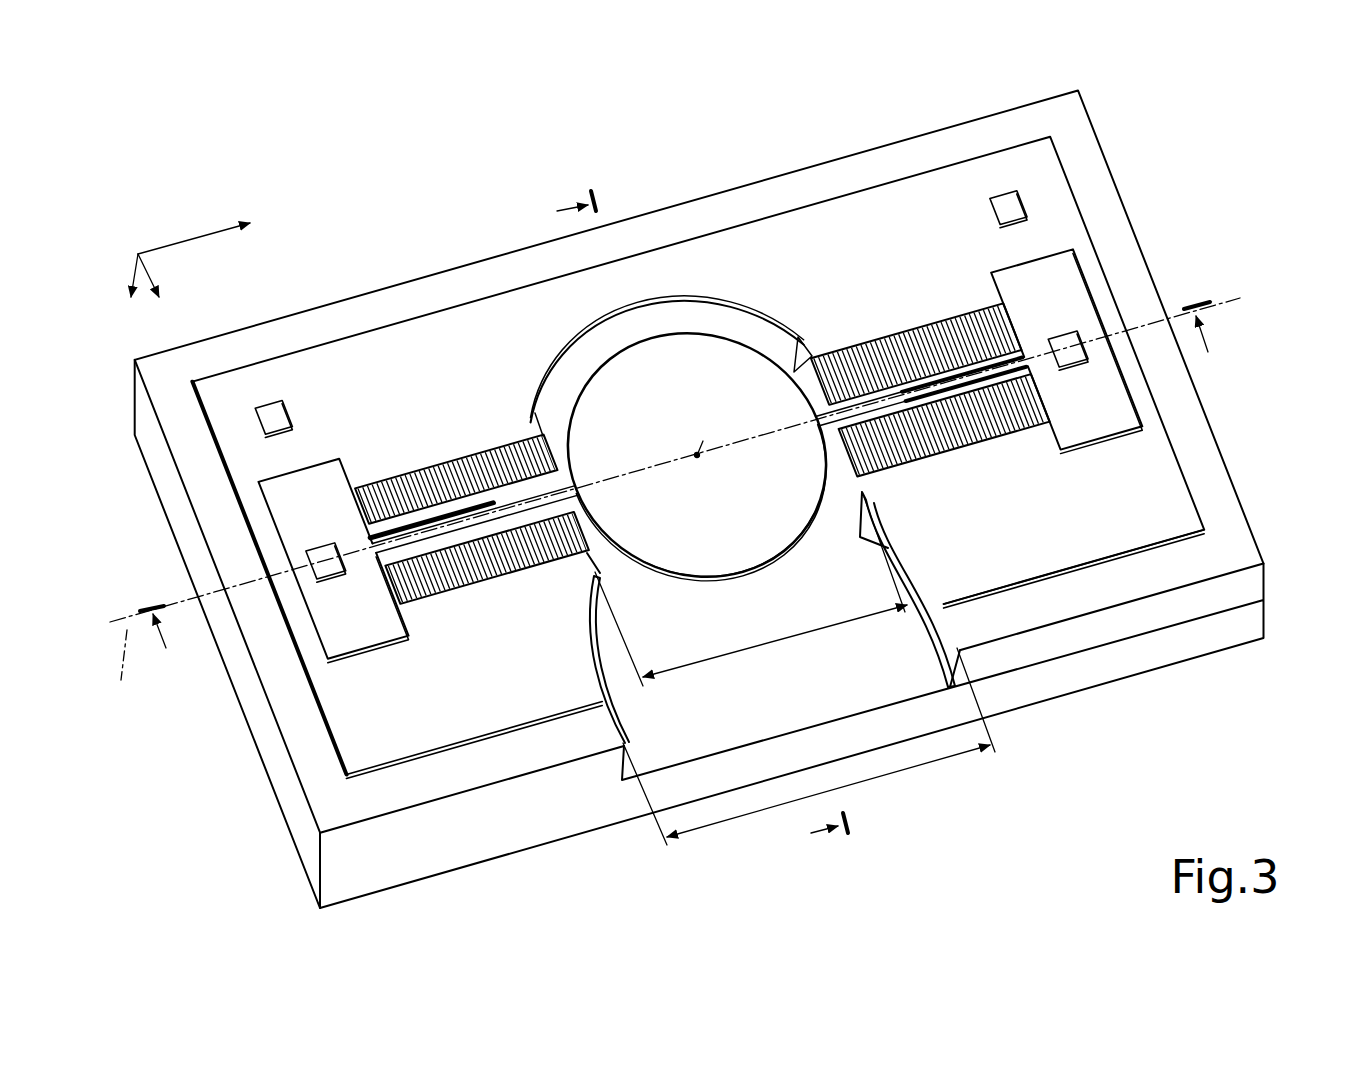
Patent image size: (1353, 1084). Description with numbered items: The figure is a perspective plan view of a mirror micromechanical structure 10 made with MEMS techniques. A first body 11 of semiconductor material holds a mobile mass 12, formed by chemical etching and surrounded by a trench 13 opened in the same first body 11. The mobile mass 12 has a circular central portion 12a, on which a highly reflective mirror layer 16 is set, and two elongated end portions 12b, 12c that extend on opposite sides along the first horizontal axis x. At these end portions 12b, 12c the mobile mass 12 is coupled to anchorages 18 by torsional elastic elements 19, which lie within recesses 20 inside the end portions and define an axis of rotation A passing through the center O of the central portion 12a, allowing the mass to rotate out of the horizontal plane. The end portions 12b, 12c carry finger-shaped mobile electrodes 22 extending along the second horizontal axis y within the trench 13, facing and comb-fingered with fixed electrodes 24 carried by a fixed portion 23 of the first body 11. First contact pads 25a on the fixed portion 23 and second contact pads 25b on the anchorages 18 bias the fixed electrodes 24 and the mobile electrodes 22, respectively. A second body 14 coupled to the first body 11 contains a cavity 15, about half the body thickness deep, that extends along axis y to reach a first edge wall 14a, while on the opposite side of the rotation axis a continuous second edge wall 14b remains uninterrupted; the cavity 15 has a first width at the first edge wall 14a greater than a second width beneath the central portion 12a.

The mirror micromechanical structure 10 is at (708, 532).
The first body 11 is at (1172, 494).
The mobile mass 12 is at (676, 333).
The central portion 12a is at (683, 566).
The end portion 12b is at (877, 413).
The end portion 12c is at (543, 563).
The trench 13 is at (574, 364).
The second body 14 is at (703, 499).
The first edge wall 14a is at (1197, 618).
The second edge wall 14b is at (128, 386).
The cavity 15 is at (926, 622).
The mirror layer 16 is at (713, 533).
The anchorage 18 is at (356, 642).
The elastic element 19 is at (428, 596).
The recess 20 is at (472, 532).
The mobile electrode 22 is at (508, 448).
The fixed portion 23 is at (833, 223).
The fixed electrode 24 is at (854, 615).
The first contact pad 25a is at (272, 408).
The second contact pad 25b is at (332, 560).